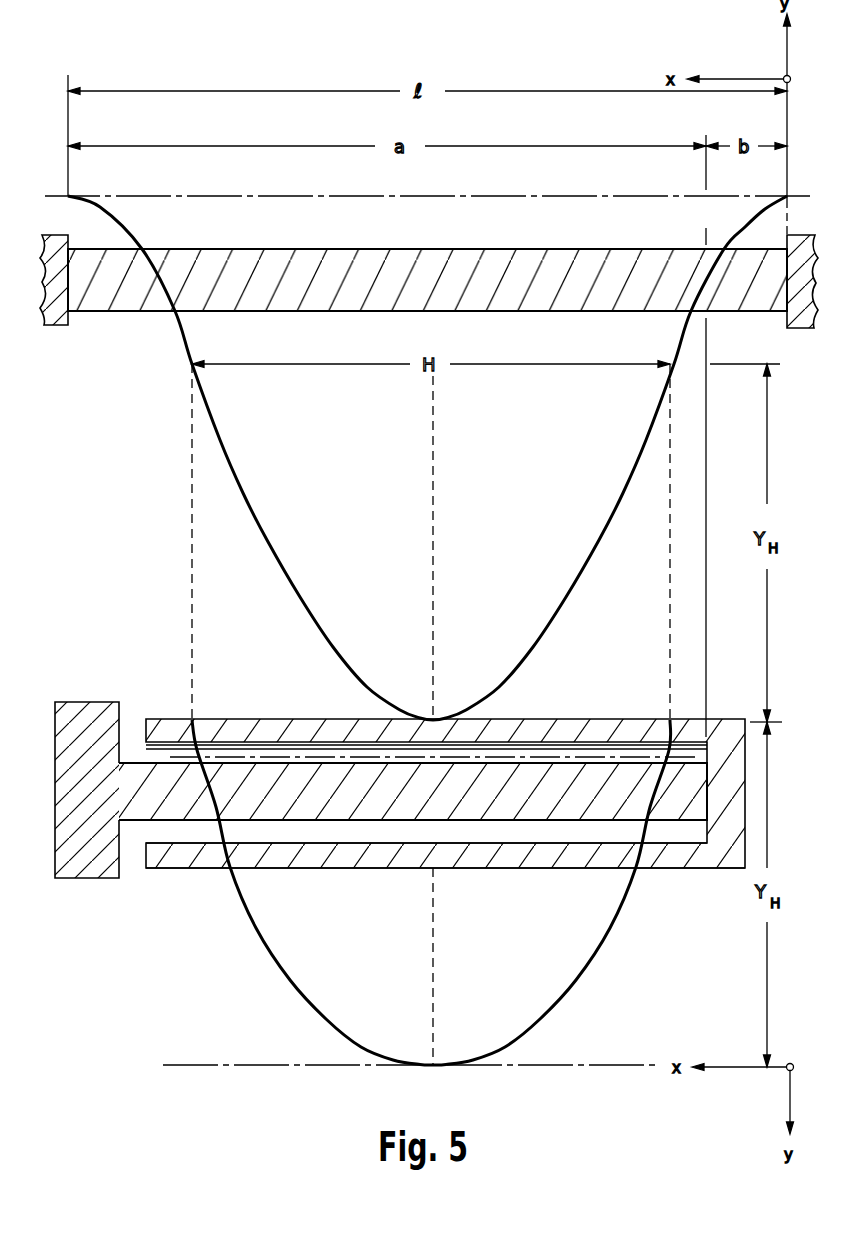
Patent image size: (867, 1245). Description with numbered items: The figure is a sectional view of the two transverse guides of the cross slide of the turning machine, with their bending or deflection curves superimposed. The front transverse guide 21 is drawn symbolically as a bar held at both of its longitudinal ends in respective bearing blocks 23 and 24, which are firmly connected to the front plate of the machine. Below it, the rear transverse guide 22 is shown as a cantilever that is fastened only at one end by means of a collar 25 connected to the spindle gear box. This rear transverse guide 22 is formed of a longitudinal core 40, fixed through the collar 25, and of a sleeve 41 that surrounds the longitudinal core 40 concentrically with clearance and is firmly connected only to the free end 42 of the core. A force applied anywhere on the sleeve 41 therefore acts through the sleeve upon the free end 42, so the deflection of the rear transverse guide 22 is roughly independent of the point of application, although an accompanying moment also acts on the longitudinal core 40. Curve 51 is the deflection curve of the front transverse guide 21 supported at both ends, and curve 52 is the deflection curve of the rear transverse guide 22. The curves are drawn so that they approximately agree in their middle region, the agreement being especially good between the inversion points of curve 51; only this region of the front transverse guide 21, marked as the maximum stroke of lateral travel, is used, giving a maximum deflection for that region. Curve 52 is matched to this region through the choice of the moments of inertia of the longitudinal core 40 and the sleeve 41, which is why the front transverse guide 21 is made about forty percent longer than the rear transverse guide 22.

The front transverse guide 21 is at (280, 262).
The rear transverse guide 22 is at (368, 871).
The bearing block 23 is at (50, 318).
The bearing block 24 is at (800, 320).
The collar 25 is at (93, 716).
The longitudinal core 40 is at (268, 775).
The sleeve 41 is at (556, 724).
The free end 42 is at (725, 813).
The deflection curve 51 is at (612, 505).
The deflection curve 52 is at (593, 937).